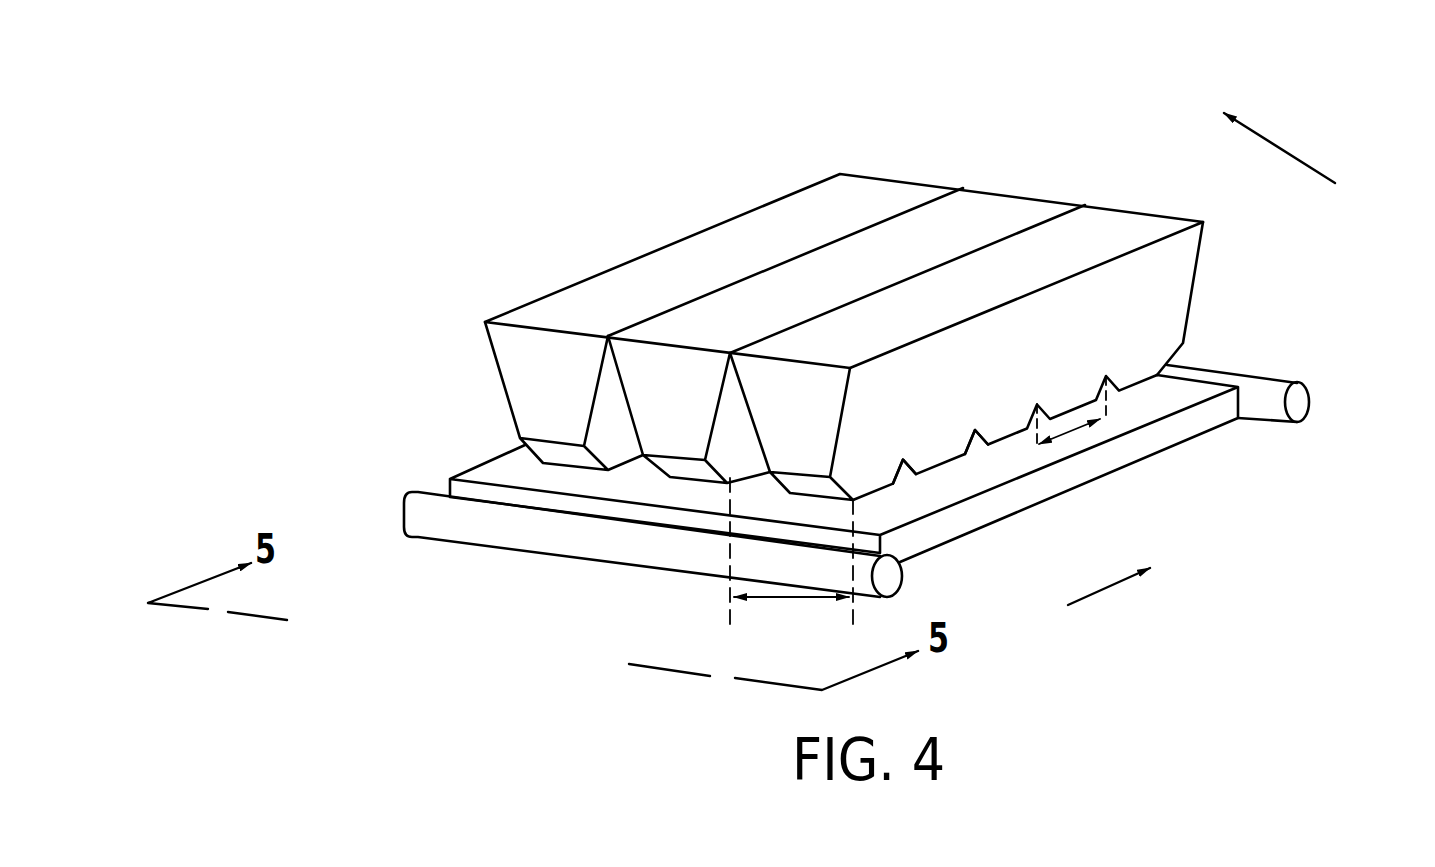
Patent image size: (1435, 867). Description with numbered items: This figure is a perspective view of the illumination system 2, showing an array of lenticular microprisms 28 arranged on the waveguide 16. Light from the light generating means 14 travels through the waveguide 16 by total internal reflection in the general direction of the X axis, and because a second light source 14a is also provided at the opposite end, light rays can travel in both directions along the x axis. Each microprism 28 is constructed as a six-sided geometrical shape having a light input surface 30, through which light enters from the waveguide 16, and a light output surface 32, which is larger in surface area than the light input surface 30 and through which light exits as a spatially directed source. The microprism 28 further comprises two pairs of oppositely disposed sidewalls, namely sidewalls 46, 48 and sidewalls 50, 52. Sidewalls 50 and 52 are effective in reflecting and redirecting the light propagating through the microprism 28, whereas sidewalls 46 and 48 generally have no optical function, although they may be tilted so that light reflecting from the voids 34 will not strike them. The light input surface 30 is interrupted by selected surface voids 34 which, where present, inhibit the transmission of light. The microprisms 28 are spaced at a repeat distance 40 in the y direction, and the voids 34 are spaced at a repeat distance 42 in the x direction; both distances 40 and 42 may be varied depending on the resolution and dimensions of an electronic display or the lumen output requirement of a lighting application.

The illumination system 2 is at (904, 346).
The light generating means 14 is at (863, 573).
The second light source 14a is at (1298, 402).
The waveguide 16 is at (1200, 416).
The microprism 28 is at (884, 352).
The light input surface 30 is at (940, 466).
The light output surface 32 is at (1128, 215).
The surface voids 34 is at (975, 445).
The repeat distance 40 is at (803, 600).
The repeat distance of voids 42 is at (1072, 432).
The sidewall 46 is at (824, 391).
The sidewall 48 is at (1212, 247).
The sidewall 50 is at (1040, 344).
The sidewall 52 is at (738, 421).